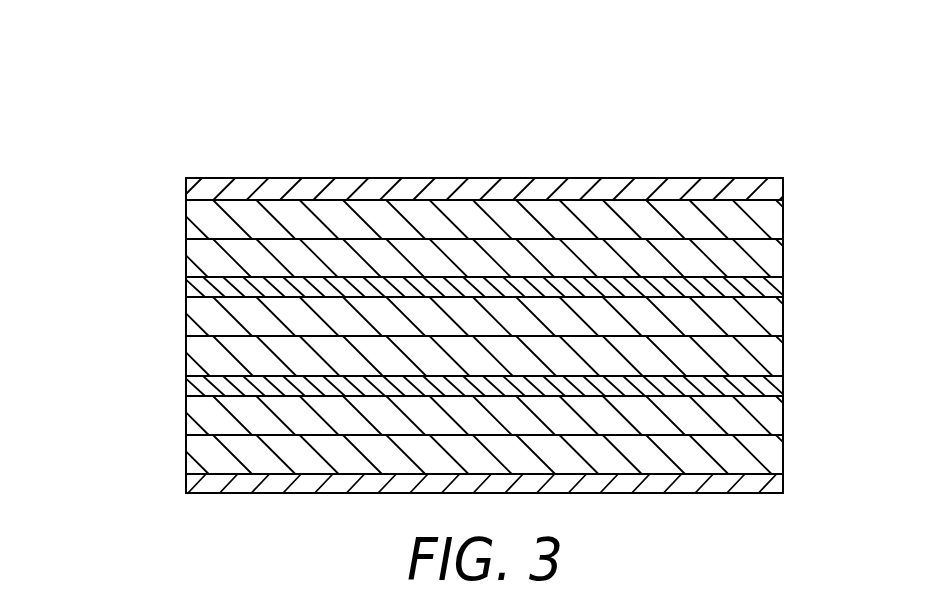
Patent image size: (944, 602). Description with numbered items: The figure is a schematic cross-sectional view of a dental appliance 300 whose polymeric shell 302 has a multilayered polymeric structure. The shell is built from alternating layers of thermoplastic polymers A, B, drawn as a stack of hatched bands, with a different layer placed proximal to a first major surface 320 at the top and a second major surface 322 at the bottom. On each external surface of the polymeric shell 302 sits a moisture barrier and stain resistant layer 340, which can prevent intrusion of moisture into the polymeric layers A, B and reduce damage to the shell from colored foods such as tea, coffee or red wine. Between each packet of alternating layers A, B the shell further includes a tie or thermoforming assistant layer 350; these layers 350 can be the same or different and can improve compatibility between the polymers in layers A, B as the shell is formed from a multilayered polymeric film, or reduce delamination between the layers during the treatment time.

The dental appliance 300 is at (134, 57).
The polymeric shell 302 is at (179, 155).
The first major surface 320 is at (206, 199).
The second major surface 322 is at (205, 477).
The moisture barrier and stain resistant layer 340 is at (778, 193).
The tie or thermoforming assistant layer 350 is at (778, 289).
The thermoplastic polymer layer A is at (200, 218).
The thermoplastic polymer layer B is at (200, 264).